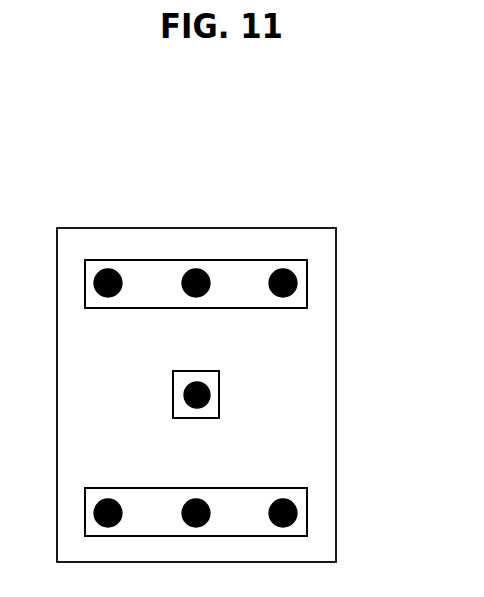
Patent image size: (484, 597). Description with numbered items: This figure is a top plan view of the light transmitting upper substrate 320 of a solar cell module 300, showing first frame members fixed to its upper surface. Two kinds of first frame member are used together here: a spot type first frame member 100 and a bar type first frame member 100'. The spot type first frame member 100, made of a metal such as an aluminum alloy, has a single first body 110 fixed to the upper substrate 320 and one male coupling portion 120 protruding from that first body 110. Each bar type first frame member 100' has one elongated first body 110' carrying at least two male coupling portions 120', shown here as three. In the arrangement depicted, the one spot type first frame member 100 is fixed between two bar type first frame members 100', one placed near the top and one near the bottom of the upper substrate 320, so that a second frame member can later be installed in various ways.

The solar cell module 300 is at (78, 203).
The light transmitting upper substrate 320 is at (277, 243).
The first body 110' is at (196, 239).
The male coupling portions 120' is at (195, 349).
The bar type first frame member 100' is at (251, 398).
The spot type first frame member 100 is at (247, 394).
The male coupling portion 120 is at (150, 384).
The first body 110 is at (154, 398).